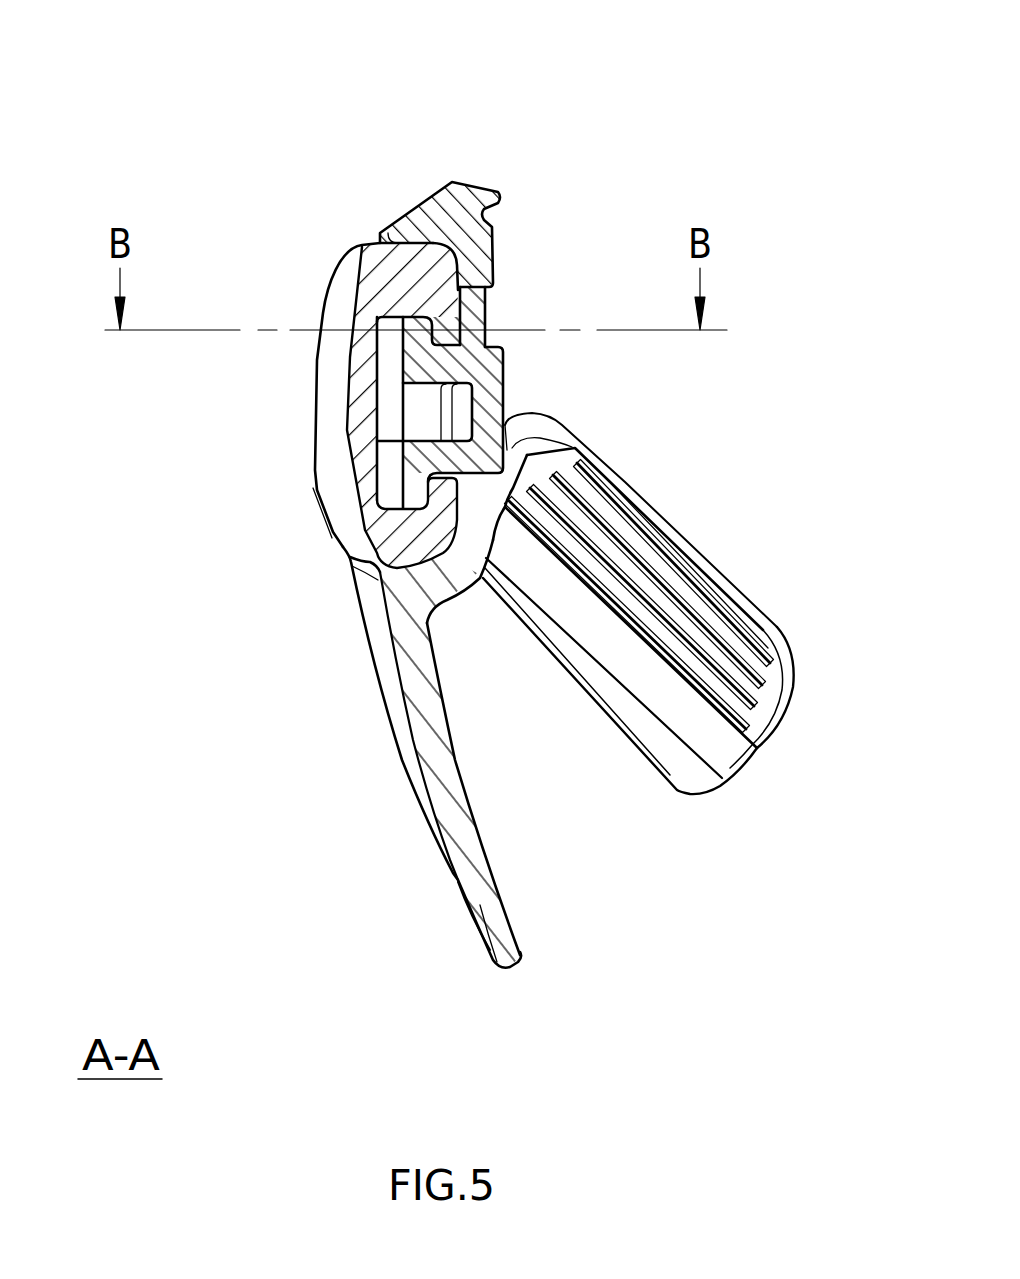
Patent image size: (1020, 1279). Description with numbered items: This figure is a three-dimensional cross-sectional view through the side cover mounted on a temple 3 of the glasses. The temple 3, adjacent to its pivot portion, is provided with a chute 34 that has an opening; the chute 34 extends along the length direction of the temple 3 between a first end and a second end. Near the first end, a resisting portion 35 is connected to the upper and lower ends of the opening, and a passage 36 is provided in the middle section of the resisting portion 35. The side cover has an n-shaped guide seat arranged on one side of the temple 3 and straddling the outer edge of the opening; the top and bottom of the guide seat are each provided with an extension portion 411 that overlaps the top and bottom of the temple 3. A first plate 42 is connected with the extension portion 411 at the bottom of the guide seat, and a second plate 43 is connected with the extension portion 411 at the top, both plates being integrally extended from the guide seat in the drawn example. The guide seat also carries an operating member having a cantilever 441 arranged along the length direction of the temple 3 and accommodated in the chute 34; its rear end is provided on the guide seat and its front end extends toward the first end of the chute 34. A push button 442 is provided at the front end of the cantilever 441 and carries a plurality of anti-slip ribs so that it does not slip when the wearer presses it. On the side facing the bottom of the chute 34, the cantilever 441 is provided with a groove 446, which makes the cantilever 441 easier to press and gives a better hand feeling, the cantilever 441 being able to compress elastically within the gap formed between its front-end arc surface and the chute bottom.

The temple 3 is at (358, 403).
The chute 34 is at (390, 425).
The resisting portion 35 is at (460, 317).
The passage 36 is at (505, 351).
The extension portion 411 is at (410, 207).
The first plate 42 is at (500, 965).
The second plate 43 is at (472, 182).
The cantilever 441 is at (390, 343).
The push button 442 is at (497, 398).
The groove 446 is at (425, 402).